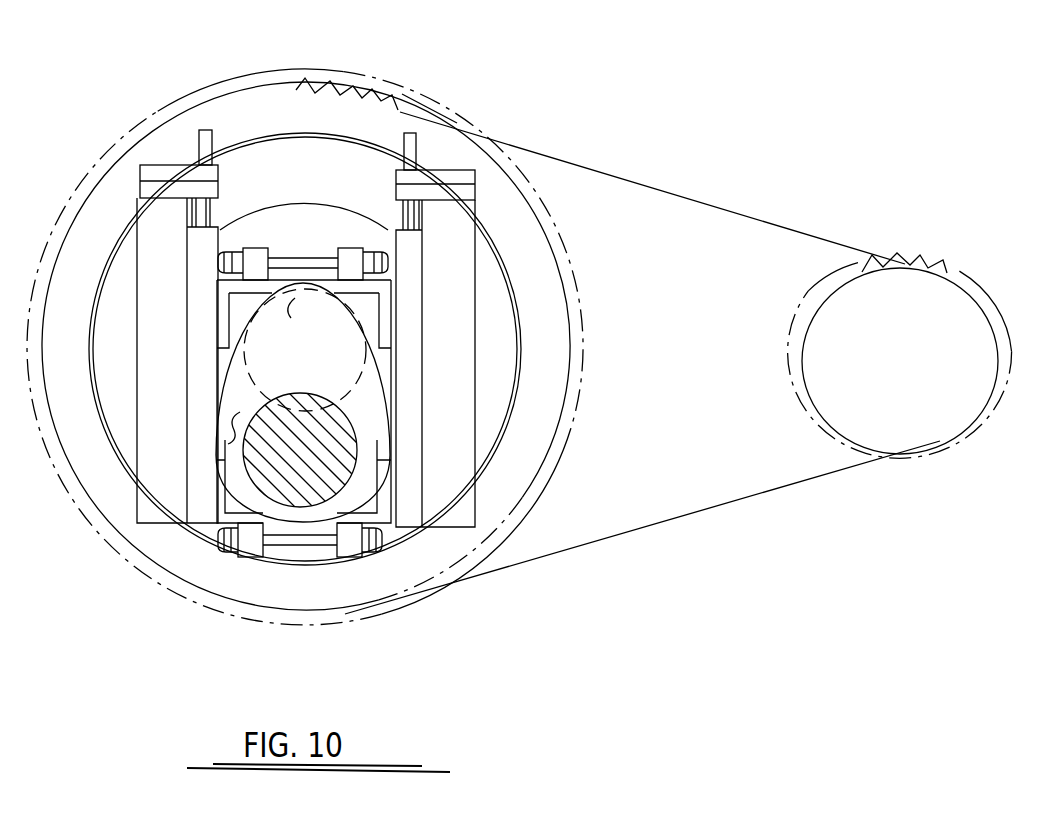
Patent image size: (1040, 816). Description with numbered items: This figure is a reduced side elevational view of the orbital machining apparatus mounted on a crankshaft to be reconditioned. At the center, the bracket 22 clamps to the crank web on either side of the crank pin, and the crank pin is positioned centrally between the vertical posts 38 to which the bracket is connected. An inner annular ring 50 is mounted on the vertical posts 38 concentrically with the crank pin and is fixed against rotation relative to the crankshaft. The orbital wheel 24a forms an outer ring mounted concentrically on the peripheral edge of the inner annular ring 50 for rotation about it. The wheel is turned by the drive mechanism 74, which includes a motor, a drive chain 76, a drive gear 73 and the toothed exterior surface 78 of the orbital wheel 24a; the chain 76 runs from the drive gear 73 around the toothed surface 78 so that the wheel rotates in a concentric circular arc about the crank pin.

The orbital wheel 24a is at (237, 117).
The inner annular ring 50 is at (278, 160).
The toothed exterior surface 78 is at (332, 80).
The drive chain 76 is at (553, 156).
The drive mechanism 74 is at (695, 148).
The drive gear 73 is at (922, 253).
The vertical post 38 is at (462, 320).
The bracket 22 is at (220, 527).